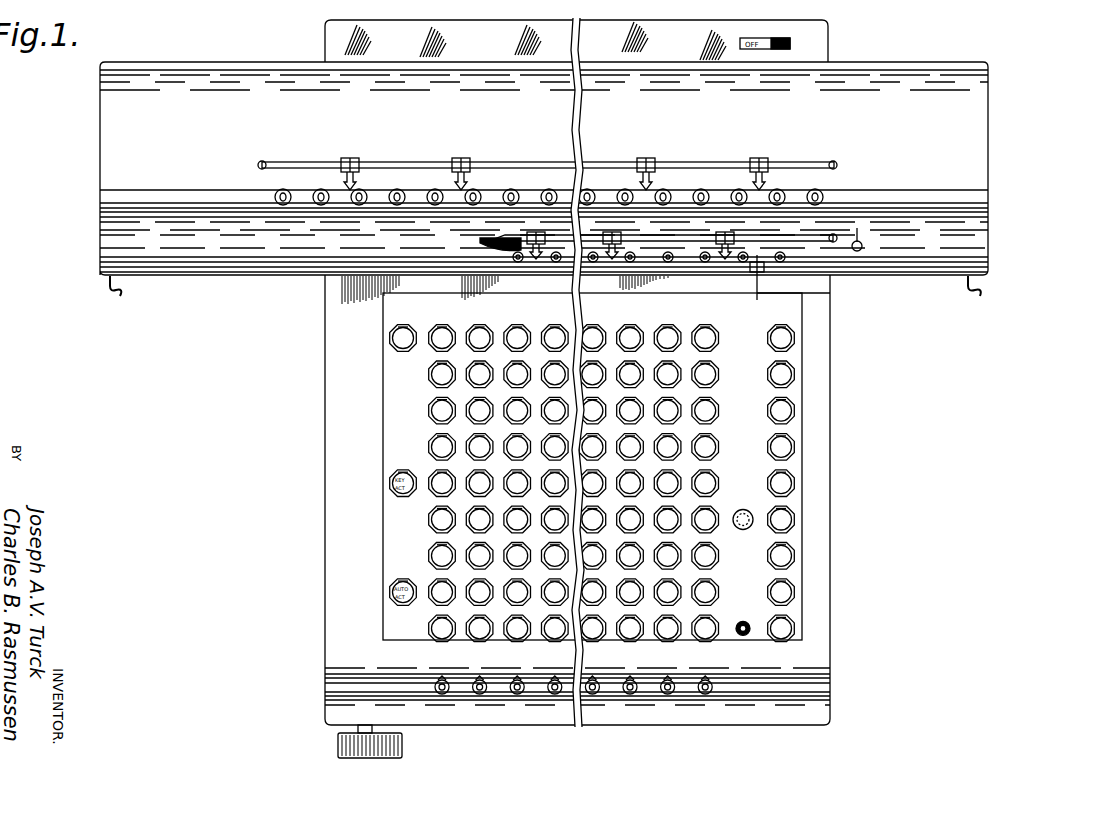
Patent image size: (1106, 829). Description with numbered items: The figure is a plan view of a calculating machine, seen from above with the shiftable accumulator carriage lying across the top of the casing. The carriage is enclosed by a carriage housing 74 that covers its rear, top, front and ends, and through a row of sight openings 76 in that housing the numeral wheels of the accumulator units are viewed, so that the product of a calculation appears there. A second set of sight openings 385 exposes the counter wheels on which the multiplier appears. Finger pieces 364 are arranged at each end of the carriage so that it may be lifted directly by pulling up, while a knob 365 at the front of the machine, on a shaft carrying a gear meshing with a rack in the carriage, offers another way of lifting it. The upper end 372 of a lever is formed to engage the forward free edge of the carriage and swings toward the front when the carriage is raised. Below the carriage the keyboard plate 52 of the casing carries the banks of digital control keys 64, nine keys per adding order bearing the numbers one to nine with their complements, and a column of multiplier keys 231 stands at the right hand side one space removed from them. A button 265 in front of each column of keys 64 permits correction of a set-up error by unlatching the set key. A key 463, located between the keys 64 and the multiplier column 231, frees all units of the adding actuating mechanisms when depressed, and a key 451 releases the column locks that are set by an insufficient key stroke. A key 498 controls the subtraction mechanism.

The carriage housing 74 is at (967, 175).
The sight openings 76 is at (321, 189).
The sight openings 385 is at (513, 256).
The finger pieces 364 is at (120, 296).
The upper end of lever 372 is at (830, 293).
The keyboard plate 52 is at (410, 410).
The digital control keys 64 is at (430, 446).
The subtraction key 498 is at (390, 341).
The multiplier keys 231 is at (796, 596).
The release key 463 is at (753, 516).
The column lock release key 451 is at (794, 632).
The knob 365 is at (402, 745).
The correction button 265 is at (705, 694).